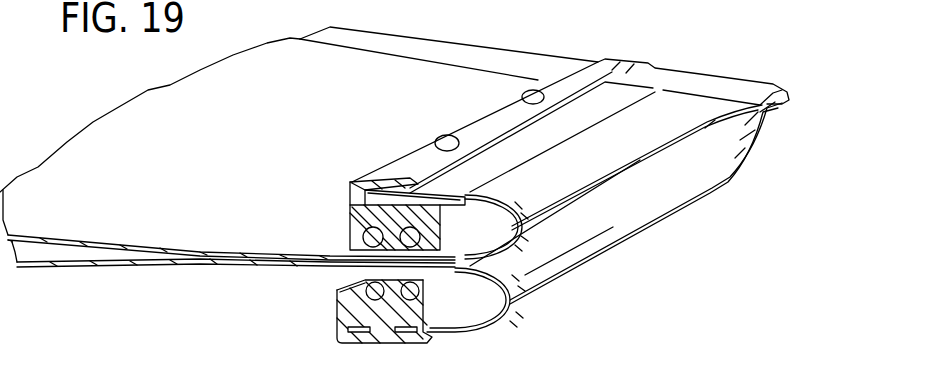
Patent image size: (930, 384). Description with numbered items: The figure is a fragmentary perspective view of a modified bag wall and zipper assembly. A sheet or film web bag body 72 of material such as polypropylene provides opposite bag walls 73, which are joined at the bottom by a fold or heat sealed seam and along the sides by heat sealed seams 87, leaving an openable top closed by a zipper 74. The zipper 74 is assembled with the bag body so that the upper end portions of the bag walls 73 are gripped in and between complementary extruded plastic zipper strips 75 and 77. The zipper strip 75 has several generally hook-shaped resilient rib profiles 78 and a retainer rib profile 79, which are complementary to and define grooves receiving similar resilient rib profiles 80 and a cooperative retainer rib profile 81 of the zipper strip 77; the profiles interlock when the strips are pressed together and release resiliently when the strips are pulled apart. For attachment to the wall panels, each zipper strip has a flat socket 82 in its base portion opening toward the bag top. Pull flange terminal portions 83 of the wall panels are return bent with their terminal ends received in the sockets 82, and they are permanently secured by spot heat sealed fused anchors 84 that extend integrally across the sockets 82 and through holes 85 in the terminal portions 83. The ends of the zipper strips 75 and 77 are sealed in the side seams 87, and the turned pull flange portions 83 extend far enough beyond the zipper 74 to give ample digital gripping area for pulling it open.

The bag body 72 is at (177, 267).
The bag walls 73 is at (67, 263).
The zipper 74 is at (277, 270).
The zipper strip 75 is at (336, 312).
The zipper strip 77 is at (352, 183).
The resilient rib profiles 78 is at (420, 293).
The retainer rib profile 79 is at (340, 292).
The resilient rib profiles 80 is at (362, 236).
The retainer rib profile 81 is at (428, 214).
The socket 82 is at (345, 330).
The pull flange terminal portions 83 is at (507, 233).
The fused anchors 84 is at (523, 97).
The holes 85 is at (377, 342).
The heat sealed seams 87 is at (792, 102).